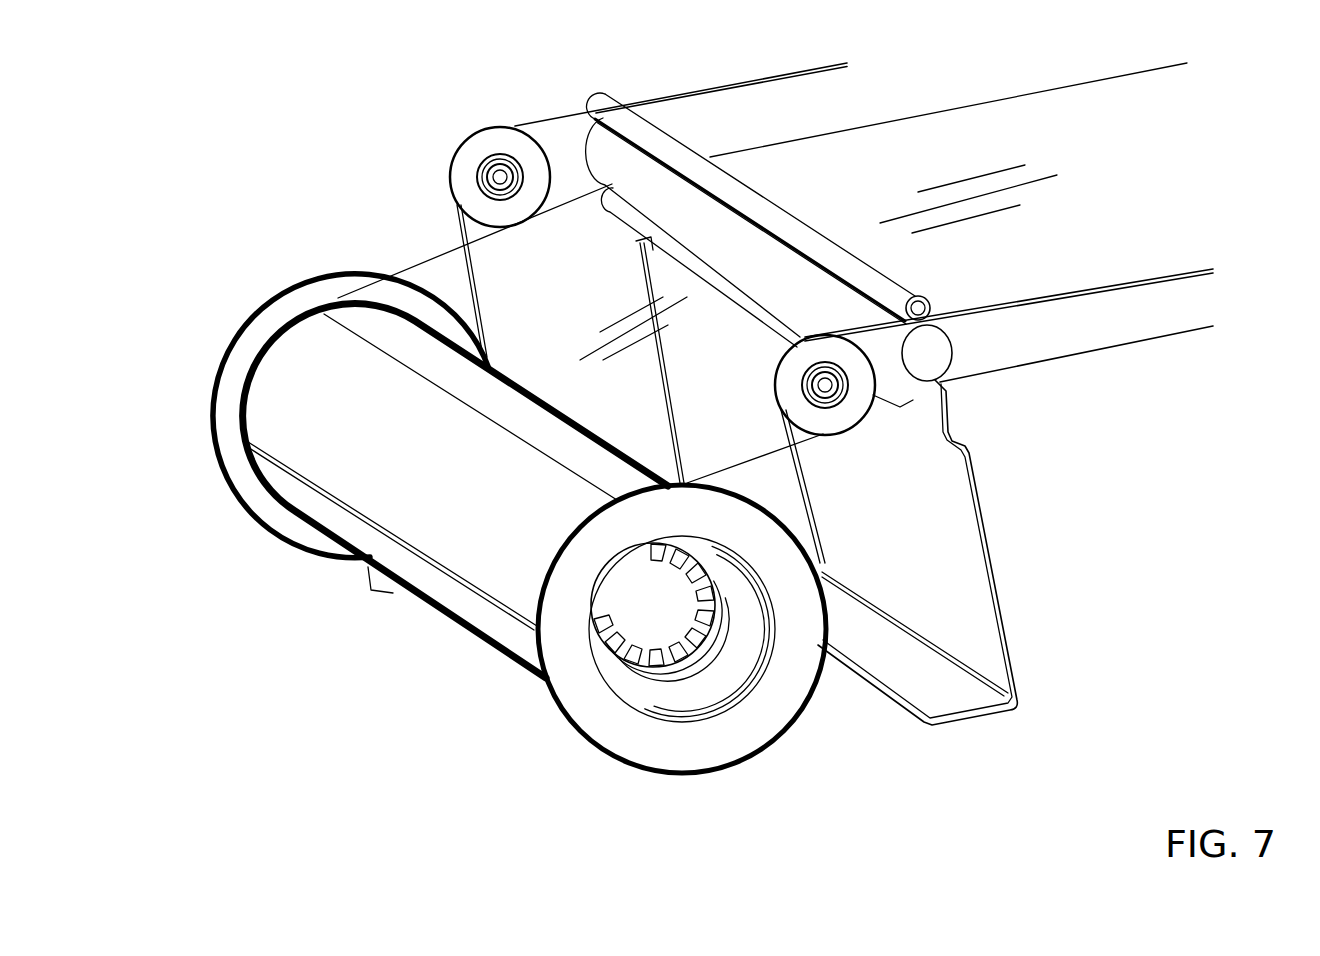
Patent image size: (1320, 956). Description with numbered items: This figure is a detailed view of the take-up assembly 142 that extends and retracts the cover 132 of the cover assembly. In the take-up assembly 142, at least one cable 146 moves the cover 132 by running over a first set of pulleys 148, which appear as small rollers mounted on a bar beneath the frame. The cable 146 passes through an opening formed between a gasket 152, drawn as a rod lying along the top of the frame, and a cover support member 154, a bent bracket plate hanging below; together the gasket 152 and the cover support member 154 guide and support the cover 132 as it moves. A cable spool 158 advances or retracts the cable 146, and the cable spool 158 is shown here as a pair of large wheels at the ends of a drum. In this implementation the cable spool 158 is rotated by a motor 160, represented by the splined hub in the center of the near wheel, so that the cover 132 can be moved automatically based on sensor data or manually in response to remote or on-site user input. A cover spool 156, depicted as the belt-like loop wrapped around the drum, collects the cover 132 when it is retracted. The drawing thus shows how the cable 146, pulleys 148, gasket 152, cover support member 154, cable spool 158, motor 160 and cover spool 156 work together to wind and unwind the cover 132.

The take-up assembly 142 is at (228, 140).
The cable 146 is at (731, 81).
The cover 132 is at (1093, 352).
The gasket 152 is at (588, 107).
The first set of pulleys 148 is at (452, 187).
The cable spool 158 is at (262, 530).
The cover spool 156 is at (417, 603).
The motor 160 is at (655, 603).
The cover support member 154 is at (960, 722).